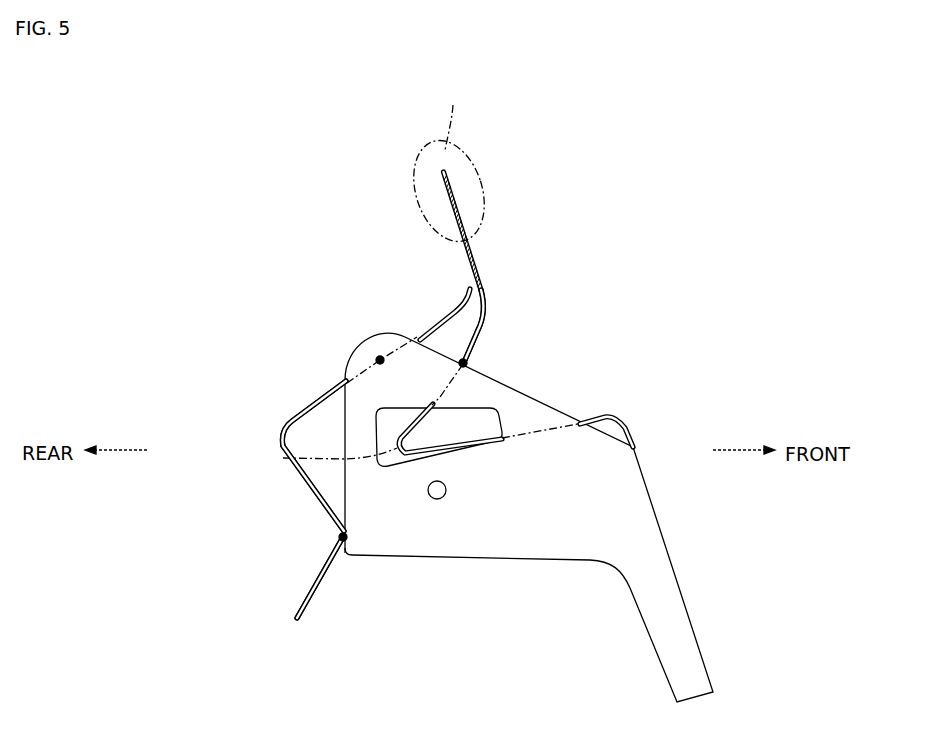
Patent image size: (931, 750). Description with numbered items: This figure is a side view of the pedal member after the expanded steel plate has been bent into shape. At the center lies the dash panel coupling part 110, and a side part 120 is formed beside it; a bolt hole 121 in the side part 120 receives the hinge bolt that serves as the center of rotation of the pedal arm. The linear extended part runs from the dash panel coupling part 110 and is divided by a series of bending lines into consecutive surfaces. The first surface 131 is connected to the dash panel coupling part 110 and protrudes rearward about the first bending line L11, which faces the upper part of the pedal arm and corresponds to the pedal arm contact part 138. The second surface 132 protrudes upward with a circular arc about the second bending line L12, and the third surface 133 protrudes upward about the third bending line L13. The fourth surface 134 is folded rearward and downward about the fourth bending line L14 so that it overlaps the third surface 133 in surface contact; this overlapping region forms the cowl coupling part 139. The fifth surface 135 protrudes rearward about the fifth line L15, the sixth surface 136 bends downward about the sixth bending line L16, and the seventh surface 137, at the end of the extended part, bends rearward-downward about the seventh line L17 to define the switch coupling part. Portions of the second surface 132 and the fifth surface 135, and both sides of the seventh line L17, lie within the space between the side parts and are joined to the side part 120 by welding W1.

The dash panel coupling part 110 is at (663, 528).
The side part 120 is at (542, 540).
The bolt hole 121 is at (437, 499).
The first surface 131 is at (547, 427).
The second surface 132 is at (462, 385).
The third surface 133 is at (472, 212).
The fourth surface 134 is at (445, 195).
The fifth surface 135 is at (317, 398).
The sixth surface 136 is at (313, 498).
The seventh surface 137 is at (302, 602).
The pedal arm contact part 138 is at (283, 457).
The cowl coupling part 139 is at (467, 158).
The first bending line L11 is at (623, 417).
The second bending line L12 is at (283, 457).
The third bending line L13 is at (485, 293).
The fourth bending line L14 is at (455, 116).
The fifth line L15 is at (467, 292).
The sixth bending line L16 is at (278, 437).
The seventh line L17 is at (363, 553).
The welding W1 is at (380, 360).